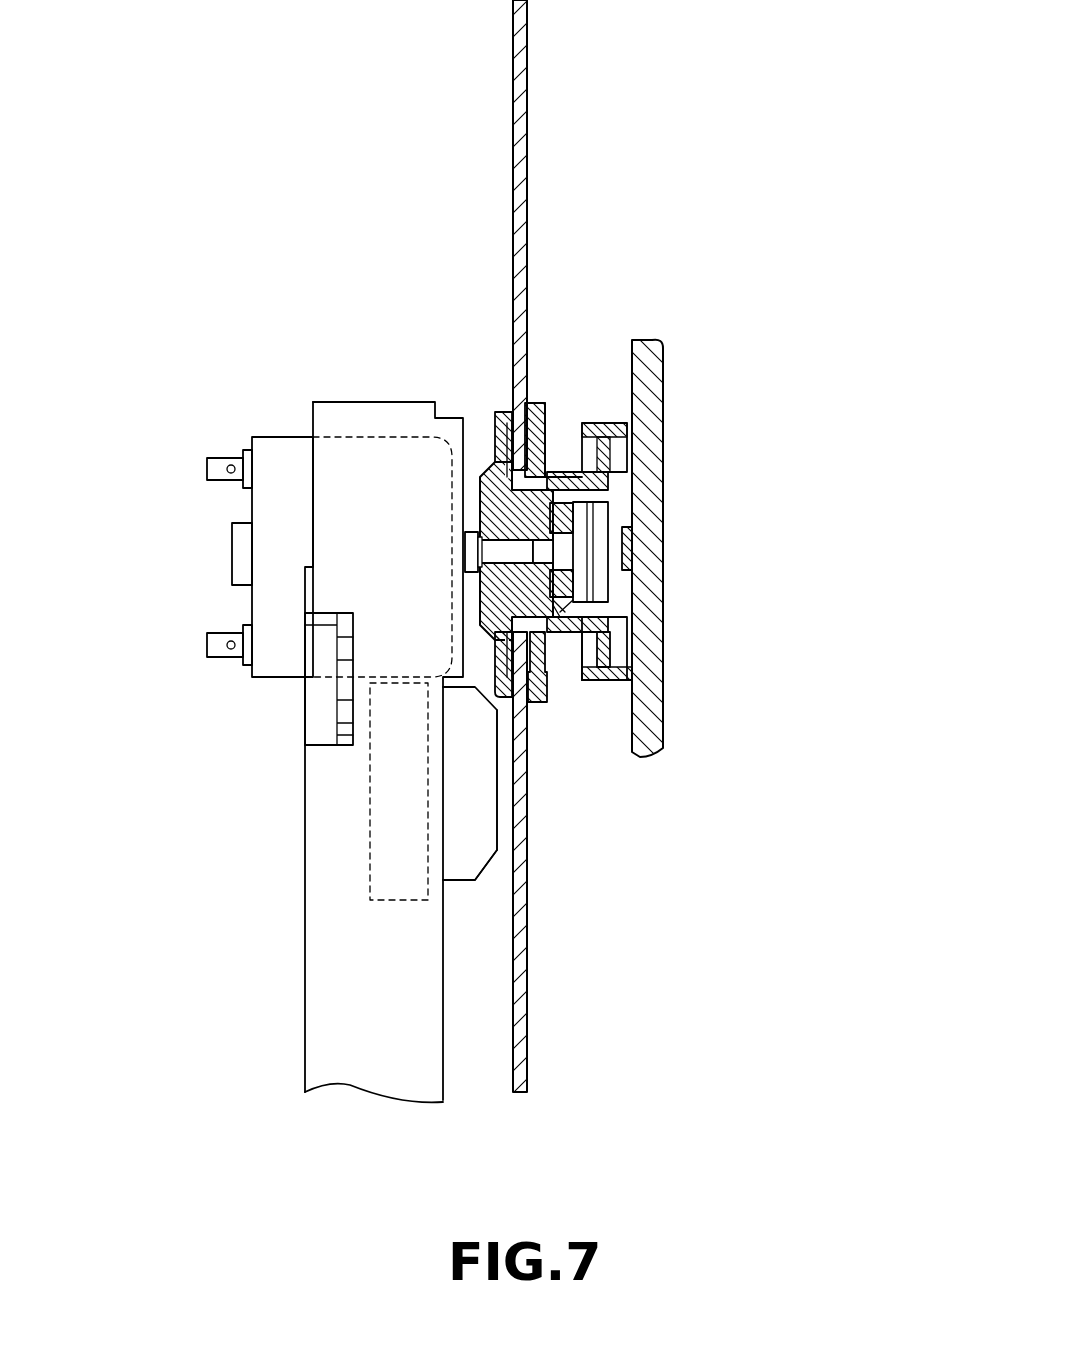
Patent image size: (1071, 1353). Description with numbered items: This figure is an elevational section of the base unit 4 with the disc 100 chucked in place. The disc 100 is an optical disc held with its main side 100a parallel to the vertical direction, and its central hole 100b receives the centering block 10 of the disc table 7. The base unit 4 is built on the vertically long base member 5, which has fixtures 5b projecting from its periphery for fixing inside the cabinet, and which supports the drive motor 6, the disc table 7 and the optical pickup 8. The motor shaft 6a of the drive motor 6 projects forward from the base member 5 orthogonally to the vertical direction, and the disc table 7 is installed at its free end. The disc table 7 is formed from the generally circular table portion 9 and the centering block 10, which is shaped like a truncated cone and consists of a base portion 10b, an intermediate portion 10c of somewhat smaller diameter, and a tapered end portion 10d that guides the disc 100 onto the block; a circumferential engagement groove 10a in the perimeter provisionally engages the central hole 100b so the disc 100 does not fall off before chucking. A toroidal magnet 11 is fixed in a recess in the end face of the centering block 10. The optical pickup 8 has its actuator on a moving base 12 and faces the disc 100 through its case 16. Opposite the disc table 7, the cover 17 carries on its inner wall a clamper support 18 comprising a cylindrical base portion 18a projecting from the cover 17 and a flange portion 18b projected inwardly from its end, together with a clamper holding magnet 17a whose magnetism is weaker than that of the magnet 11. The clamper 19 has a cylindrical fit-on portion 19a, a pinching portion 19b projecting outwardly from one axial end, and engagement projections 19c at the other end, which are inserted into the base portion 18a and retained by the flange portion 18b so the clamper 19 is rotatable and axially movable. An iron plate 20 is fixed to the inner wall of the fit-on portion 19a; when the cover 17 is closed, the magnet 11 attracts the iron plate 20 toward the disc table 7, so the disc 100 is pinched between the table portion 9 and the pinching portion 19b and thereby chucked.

The disc-shaped recording medium 100 is at (527, 98).
The main side 100a is at (513, 232).
The central hole 100b is at (478, 492).
The base unit 4 is at (700, 296).
The base member 5 is at (330, 975).
The fixture 5b is at (345, 738).
The drive motor 6 is at (284, 452).
The motor shaft 6a is at (508, 552).
The disc table 7 is at (600, 470).
The optical pickup 8 is at (490, 866).
The table portion 9 is at (500, 408).
The centering block 10 is at (612, 620).
The engagement groove 10a is at (496, 410).
The base portion 10b is at (478, 612).
The intermediate portion 10c is at (552, 637).
The end portion 10d is at (600, 592).
The magnet 11 is at (606, 565).
The moving base 12 is at (370, 837).
The case 16 is at (463, 845).
The cover 17 is at (664, 368).
The clamper holding magnet 17a is at (640, 548).
The clamper support 18 is at (664, 730).
The base portion 18a is at (596, 680).
The flange portion 18b is at (583, 668).
The clamper 19 is at (533, 703).
The fit-on portion 19a is at (560, 462).
The pinching portion 19b is at (548, 420).
The engagement projection 19c is at (618, 430).
The iron plate 20 is at (600, 520).